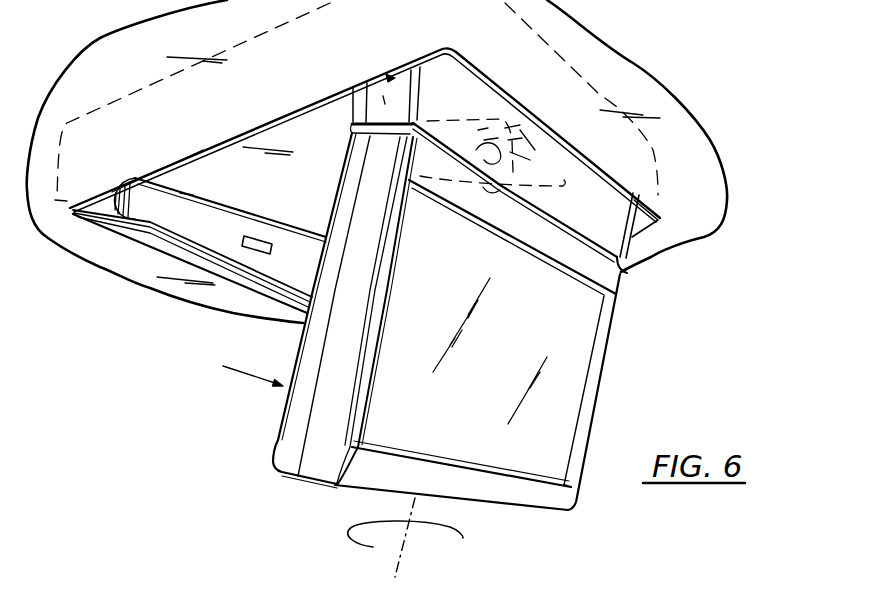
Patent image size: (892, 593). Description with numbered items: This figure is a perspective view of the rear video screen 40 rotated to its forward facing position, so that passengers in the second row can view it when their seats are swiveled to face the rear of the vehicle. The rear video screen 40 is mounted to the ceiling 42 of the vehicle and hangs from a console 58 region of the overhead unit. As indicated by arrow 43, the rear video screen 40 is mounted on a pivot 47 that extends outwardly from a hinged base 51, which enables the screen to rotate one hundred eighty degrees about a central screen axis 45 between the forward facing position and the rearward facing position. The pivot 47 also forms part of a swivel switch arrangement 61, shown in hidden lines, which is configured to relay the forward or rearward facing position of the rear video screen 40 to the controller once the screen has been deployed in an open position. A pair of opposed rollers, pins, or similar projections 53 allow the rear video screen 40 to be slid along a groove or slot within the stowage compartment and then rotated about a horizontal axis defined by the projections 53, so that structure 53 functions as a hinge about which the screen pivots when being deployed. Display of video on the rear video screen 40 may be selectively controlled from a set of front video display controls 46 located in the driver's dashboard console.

The rear video screen 40 is at (625, 332).
The ceiling 42 is at (183, 55).
The arrow 43 is at (430, 544).
The central screen axis 45 is at (402, 565).
The front video display controls 46 is at (173, 235).
The pivot 47 is at (420, 175).
The hinged base 51 is at (623, 197).
The projections 53 is at (245, 97).
The console 58 is at (230, 272).
The swivel switch arrangement 61 is at (459, 112).